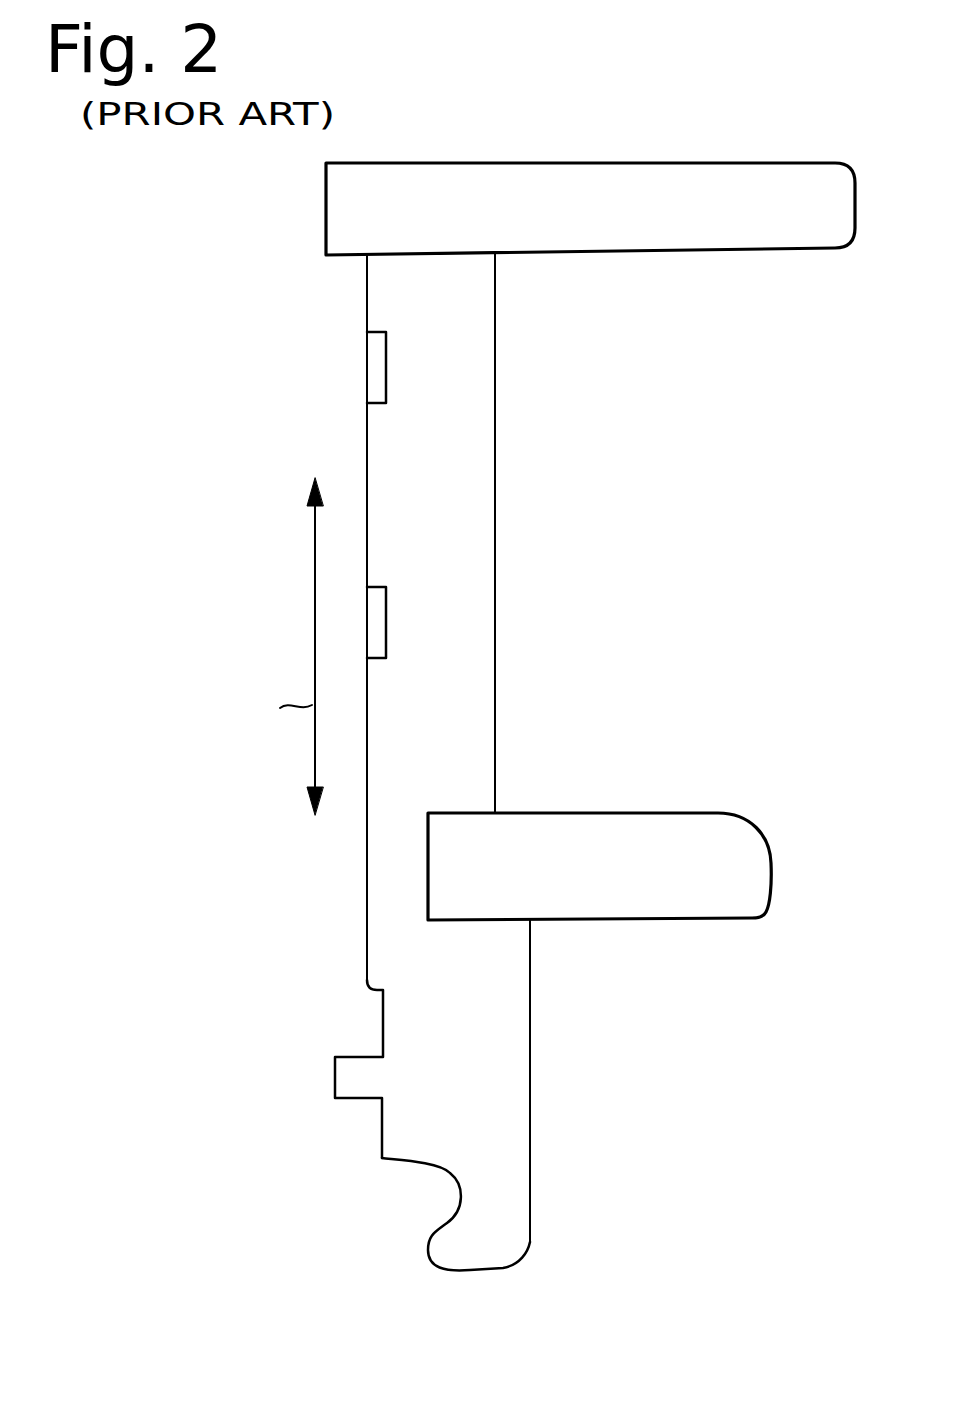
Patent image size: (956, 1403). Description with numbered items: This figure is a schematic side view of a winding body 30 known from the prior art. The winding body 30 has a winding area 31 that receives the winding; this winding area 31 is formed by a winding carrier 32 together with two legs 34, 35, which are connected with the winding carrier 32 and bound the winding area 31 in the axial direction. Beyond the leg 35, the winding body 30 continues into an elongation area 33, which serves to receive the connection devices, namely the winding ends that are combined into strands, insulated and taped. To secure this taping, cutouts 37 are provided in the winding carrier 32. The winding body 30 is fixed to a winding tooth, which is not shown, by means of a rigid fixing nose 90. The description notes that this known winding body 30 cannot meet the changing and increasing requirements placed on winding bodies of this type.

The winding body 30 is at (248, 227).
The winding area 31 is at (676, 545).
The winding carrier 32 is at (355, 418).
The elongation area 33 is at (520, 1025).
The leg 34 is at (605, 186).
The leg 35 is at (593, 826).
The cutouts 37 is at (414, 1192).
The rigid fixing nose 90 is at (342, 1062).